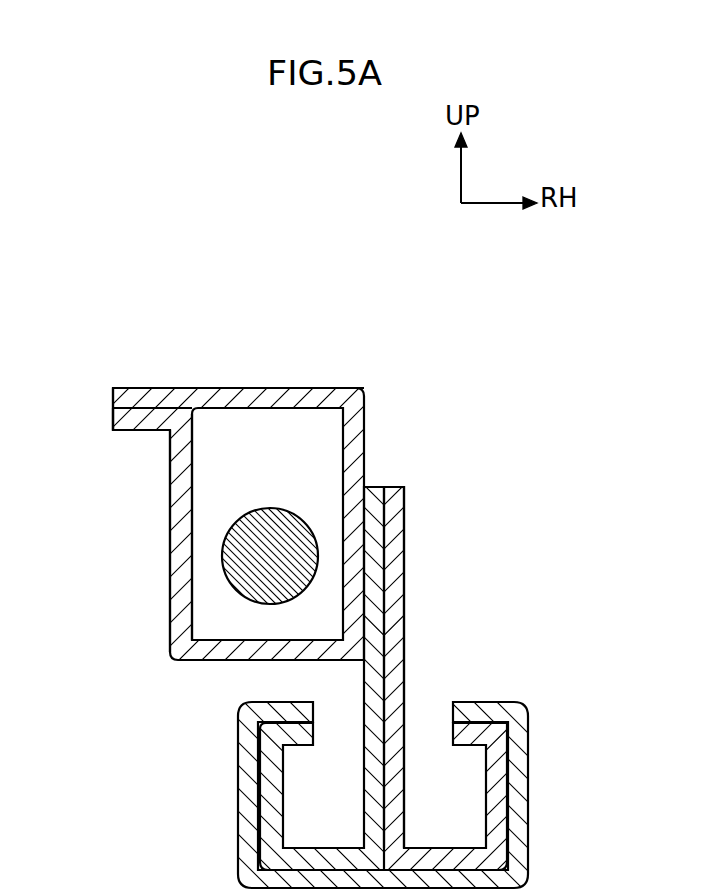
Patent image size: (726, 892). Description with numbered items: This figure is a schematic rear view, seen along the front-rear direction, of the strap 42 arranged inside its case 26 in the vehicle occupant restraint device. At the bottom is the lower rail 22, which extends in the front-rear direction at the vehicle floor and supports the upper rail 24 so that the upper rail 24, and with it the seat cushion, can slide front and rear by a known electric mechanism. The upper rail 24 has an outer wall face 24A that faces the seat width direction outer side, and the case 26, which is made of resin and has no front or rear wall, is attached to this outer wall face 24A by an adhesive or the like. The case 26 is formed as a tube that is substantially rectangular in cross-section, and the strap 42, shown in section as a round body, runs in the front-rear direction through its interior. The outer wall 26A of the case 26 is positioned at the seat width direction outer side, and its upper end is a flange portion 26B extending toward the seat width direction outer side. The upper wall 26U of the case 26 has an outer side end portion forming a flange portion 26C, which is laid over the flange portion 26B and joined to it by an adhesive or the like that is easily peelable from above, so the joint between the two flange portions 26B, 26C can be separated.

The lower rail 22 is at (528, 760).
The upper rail 24 is at (412, 573).
The outer wall face 24A is at (363, 533).
The case 26 is at (269, 374).
The outer wall 26A is at (170, 535).
The flange portion 26B is at (137, 430).
The flange portion 26C is at (140, 388).
The upper wall 26U is at (232, 387).
The strap 42 is at (268, 535).